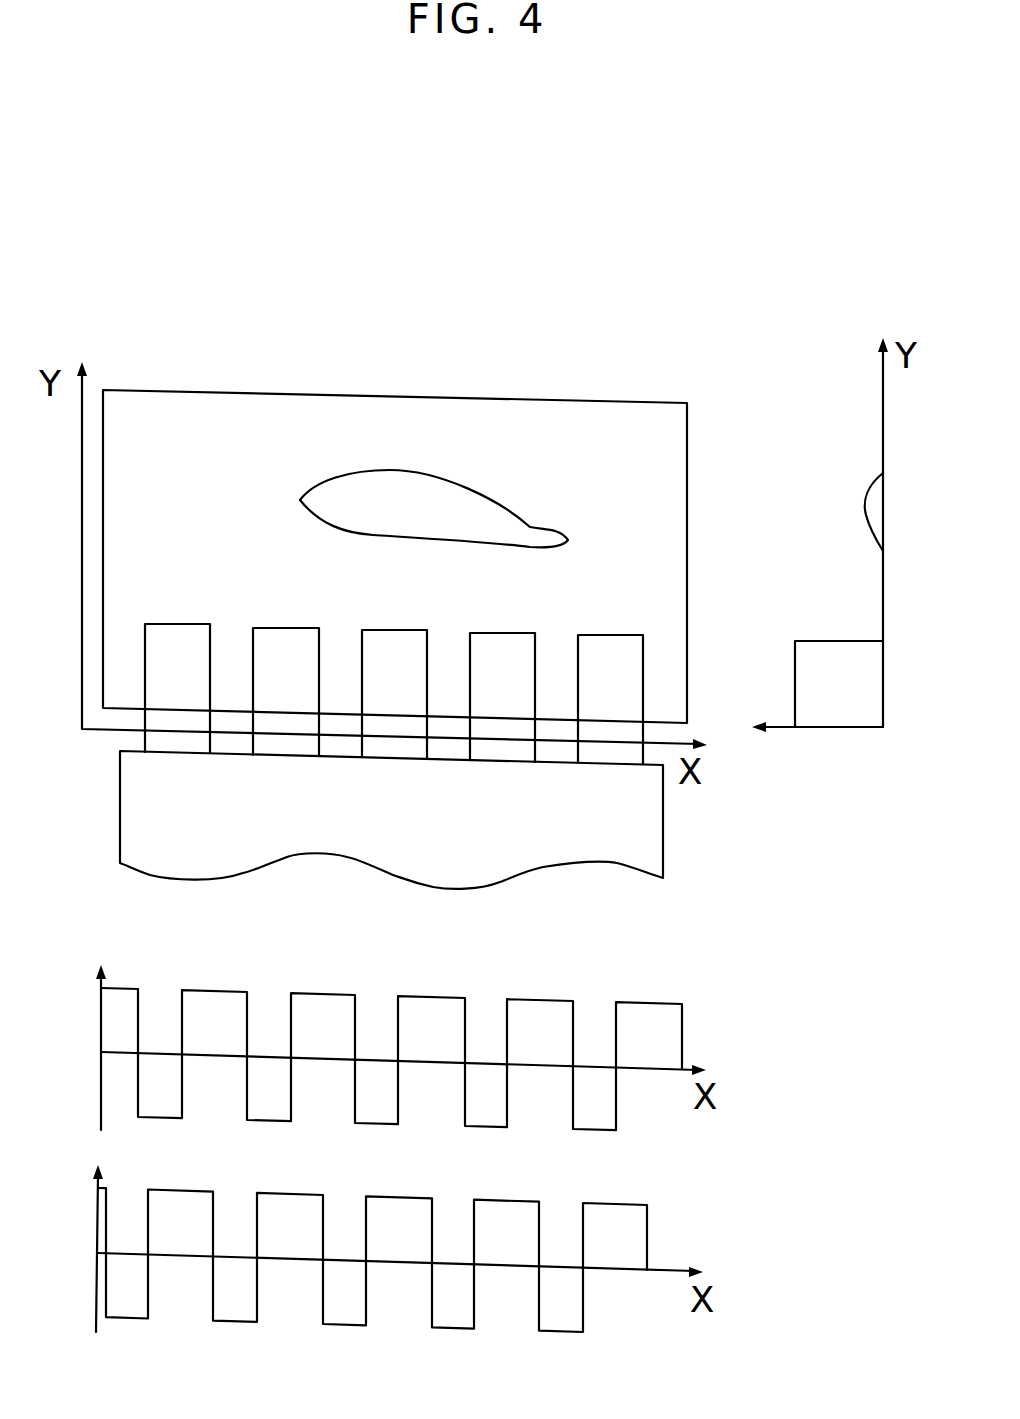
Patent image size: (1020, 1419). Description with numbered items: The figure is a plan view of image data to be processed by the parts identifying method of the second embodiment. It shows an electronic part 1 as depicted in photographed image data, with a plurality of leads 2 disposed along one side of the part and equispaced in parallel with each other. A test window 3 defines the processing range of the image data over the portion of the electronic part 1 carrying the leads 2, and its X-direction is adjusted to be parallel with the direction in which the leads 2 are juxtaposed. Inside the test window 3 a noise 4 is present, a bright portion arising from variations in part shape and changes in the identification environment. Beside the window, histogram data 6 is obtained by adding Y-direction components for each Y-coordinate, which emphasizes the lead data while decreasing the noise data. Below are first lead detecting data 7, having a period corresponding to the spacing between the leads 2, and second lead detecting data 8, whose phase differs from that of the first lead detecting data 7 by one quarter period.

The electronic part 1 is at (640, 835).
The leads 2 is at (405, 673).
The test window 3 is at (528, 440).
The noise 4 is at (362, 500).
The histogram data 6 is at (816, 706).
The first lead detecting data 7 is at (648, 1036).
The second lead detecting data 8 is at (615, 1238).